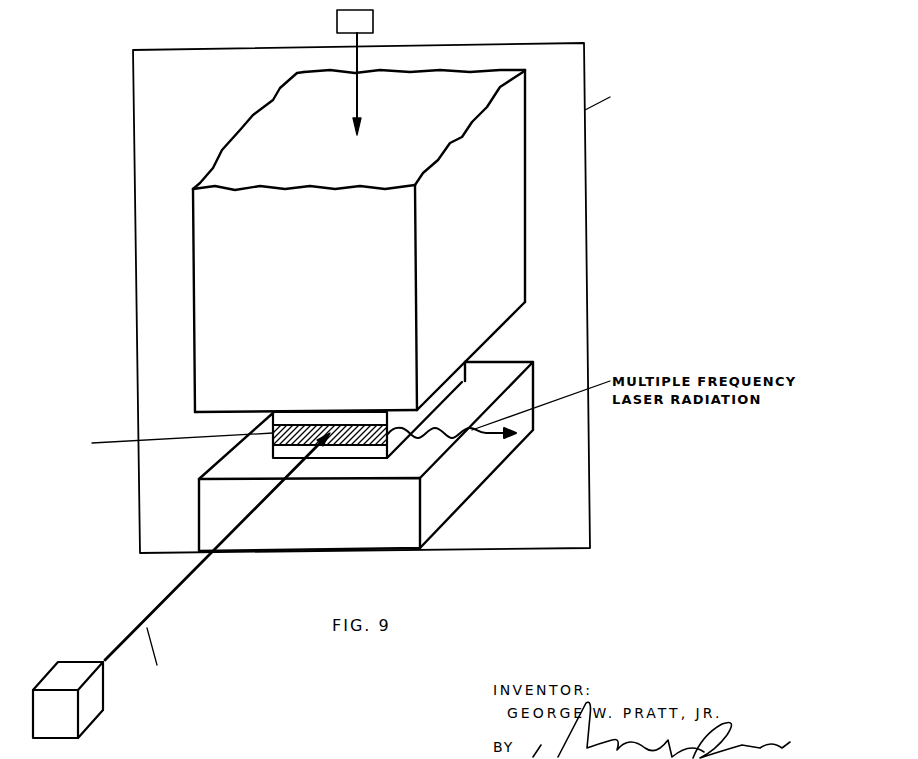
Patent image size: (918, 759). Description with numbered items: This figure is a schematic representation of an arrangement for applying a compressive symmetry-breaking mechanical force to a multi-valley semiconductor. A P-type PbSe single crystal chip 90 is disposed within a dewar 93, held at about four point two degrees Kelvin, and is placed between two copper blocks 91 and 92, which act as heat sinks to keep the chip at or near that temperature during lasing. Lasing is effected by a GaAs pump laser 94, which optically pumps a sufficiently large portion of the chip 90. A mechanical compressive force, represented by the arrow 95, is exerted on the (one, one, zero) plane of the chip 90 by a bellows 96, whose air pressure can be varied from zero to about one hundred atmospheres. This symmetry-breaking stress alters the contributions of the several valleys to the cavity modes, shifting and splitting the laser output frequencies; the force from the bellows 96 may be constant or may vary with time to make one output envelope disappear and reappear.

The P-type PbSe single crystal chip 90 is at (362, 452).
The copper block 91 is at (223, 218).
The copper block 92 is at (265, 533).
The dewar 93 is at (585, 68).
The GaAs pump laser 94 is at (52, 682).
The mechanical compressive force 95 is at (373, 36).
The bellows 96 is at (366, 30).